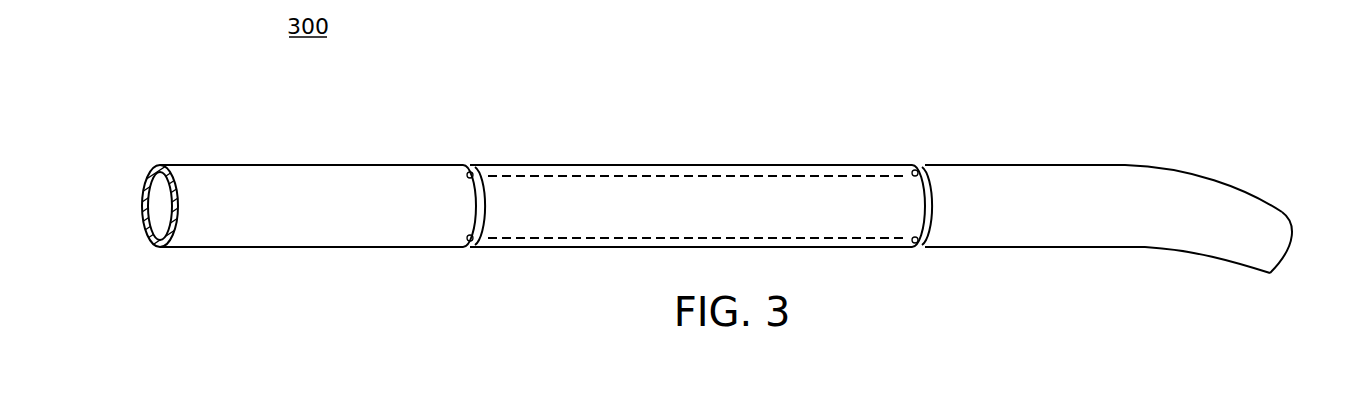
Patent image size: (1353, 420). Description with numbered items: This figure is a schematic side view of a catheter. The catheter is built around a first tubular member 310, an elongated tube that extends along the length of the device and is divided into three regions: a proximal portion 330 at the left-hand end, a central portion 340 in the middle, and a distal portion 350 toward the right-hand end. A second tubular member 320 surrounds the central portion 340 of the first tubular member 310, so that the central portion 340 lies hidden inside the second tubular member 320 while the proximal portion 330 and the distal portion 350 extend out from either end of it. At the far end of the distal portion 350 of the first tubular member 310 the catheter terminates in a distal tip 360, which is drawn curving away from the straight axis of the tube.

The first tubular member 310 is at (303, 181).
The second tubular member 320 is at (699, 160).
The proximal portion 330 is at (242, 148).
The central portion 340 is at (543, 177).
The distal portion 350 is at (1128, 178).
The distal tip 360 is at (1283, 212).